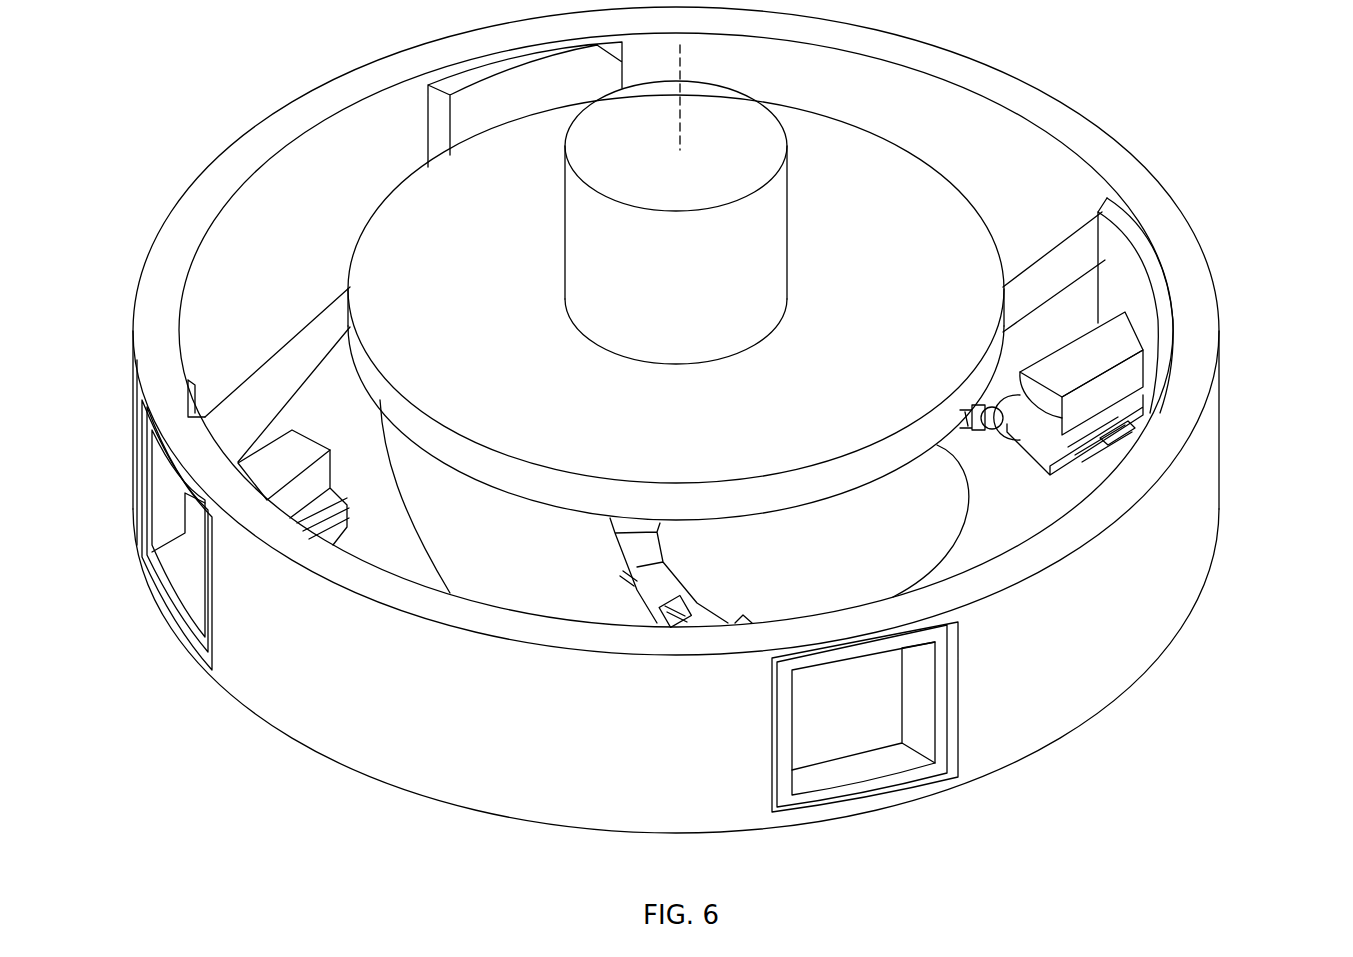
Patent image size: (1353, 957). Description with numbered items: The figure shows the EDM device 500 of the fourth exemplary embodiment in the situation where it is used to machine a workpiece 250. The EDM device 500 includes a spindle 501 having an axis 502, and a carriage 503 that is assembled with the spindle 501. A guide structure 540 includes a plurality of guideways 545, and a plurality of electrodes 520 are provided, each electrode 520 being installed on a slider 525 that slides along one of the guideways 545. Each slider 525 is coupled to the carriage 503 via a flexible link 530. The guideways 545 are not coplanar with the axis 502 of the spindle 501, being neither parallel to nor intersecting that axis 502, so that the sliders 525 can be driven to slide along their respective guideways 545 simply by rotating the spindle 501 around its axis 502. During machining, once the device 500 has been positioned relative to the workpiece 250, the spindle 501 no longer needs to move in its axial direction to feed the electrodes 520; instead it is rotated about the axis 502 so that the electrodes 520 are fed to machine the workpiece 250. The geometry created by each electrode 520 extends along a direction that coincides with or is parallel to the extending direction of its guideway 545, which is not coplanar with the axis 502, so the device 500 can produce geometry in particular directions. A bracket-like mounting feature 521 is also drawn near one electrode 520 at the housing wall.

The workpiece 250 is at (1073, 125).
The EDM device 500 is at (379, 186).
The spindle 501 is at (750, 152).
The axis 502 is at (680, 93).
The carriage 503 is at (948, 220).
The electrode 520 is at (1112, 342).
The motor bracket 521 is at (1153, 283).
The slider 525 is at (1070, 428).
The flexible link 530 is at (997, 427).
The guide structure 540 is at (1043, 500).
The guideway 545 is at (1120, 423).